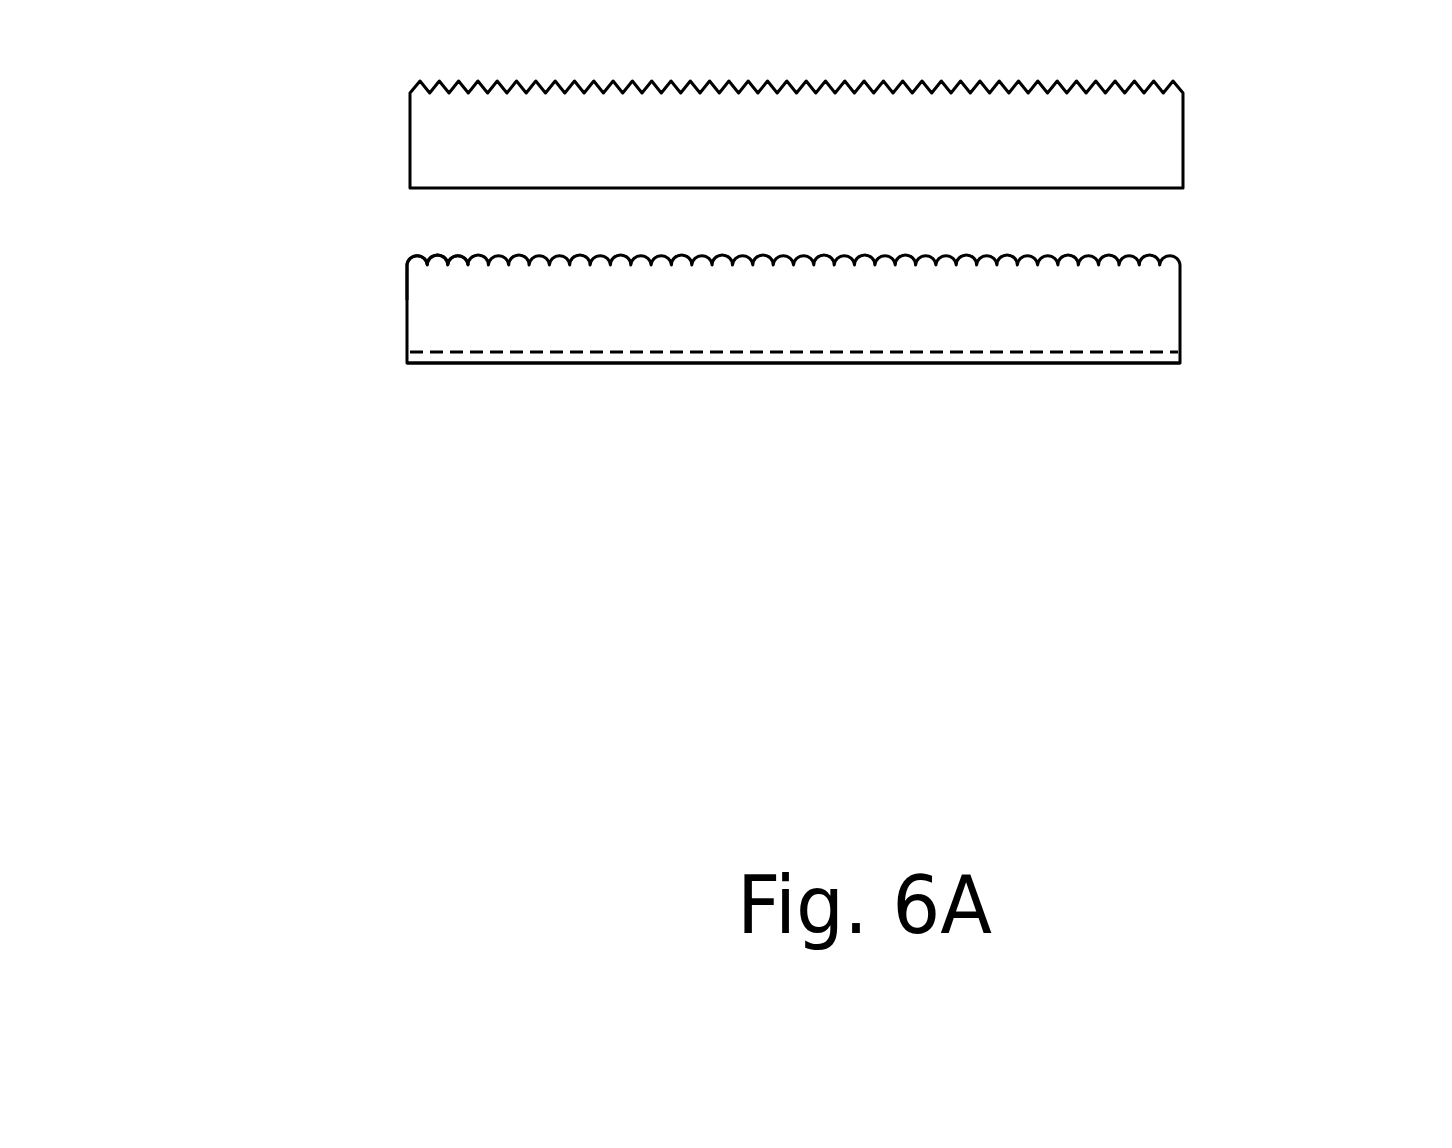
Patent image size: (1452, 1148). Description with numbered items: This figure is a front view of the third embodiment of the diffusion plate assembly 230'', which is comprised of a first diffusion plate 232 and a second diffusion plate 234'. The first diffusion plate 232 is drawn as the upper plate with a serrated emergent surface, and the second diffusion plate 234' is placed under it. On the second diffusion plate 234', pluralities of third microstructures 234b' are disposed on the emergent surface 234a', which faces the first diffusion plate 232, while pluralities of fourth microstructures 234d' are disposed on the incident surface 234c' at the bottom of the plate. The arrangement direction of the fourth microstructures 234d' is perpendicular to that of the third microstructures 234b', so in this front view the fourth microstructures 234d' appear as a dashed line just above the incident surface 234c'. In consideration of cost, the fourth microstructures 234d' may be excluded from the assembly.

The first diffusion plate 232 is at (1183, 142).
The second diffusion plate 234' is at (781, 414).
The emergent surface 234a' is at (306, 214).
The third microstructures 234b' is at (305, 319).
The incident surface 234c' is at (726, 514).
The fourth microstructures 234d' is at (650, 440).
The diffusion plate assembly 230'' is at (901, 347).